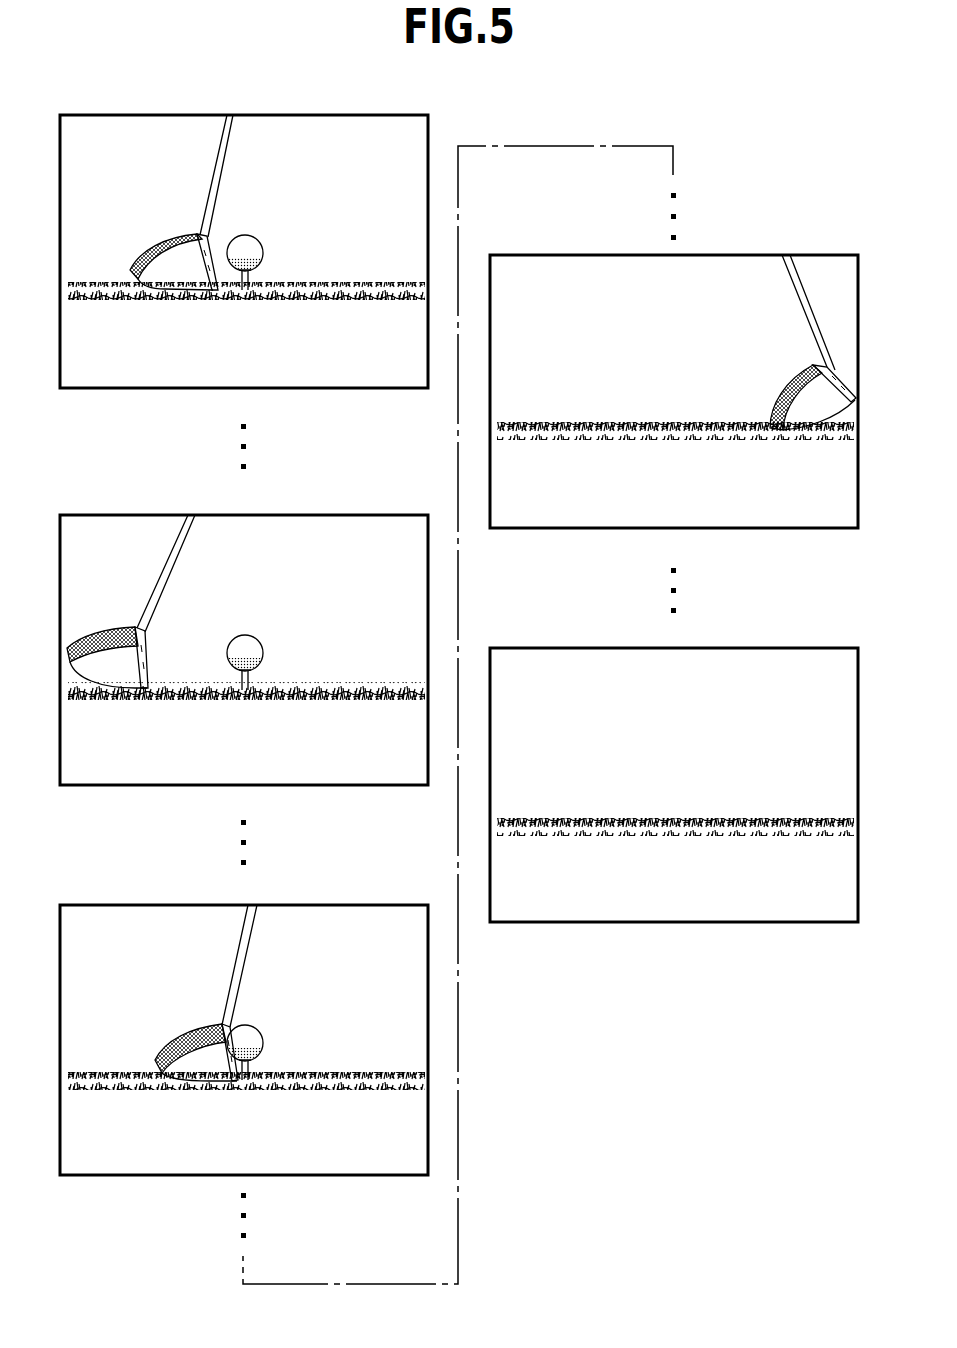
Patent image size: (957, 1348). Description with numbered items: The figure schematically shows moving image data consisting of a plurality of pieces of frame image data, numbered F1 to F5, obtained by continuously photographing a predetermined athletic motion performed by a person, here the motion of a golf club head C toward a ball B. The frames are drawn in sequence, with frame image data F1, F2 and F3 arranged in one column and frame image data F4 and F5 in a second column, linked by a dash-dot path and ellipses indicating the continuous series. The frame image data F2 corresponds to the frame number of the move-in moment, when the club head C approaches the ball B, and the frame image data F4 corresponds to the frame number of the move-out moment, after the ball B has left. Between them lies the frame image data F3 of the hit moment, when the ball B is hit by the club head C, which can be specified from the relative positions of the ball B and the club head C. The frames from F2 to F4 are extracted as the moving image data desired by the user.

The club head C is at (152, 241).
The ball B is at (253, 250).
The frame image data F1 is at (350, 114).
The frame image data F2 is at (350, 514).
The frame image data F3 is at (350, 904).
The frame image data F4 is at (753, 254).
The frame image data F5 is at (753, 647).